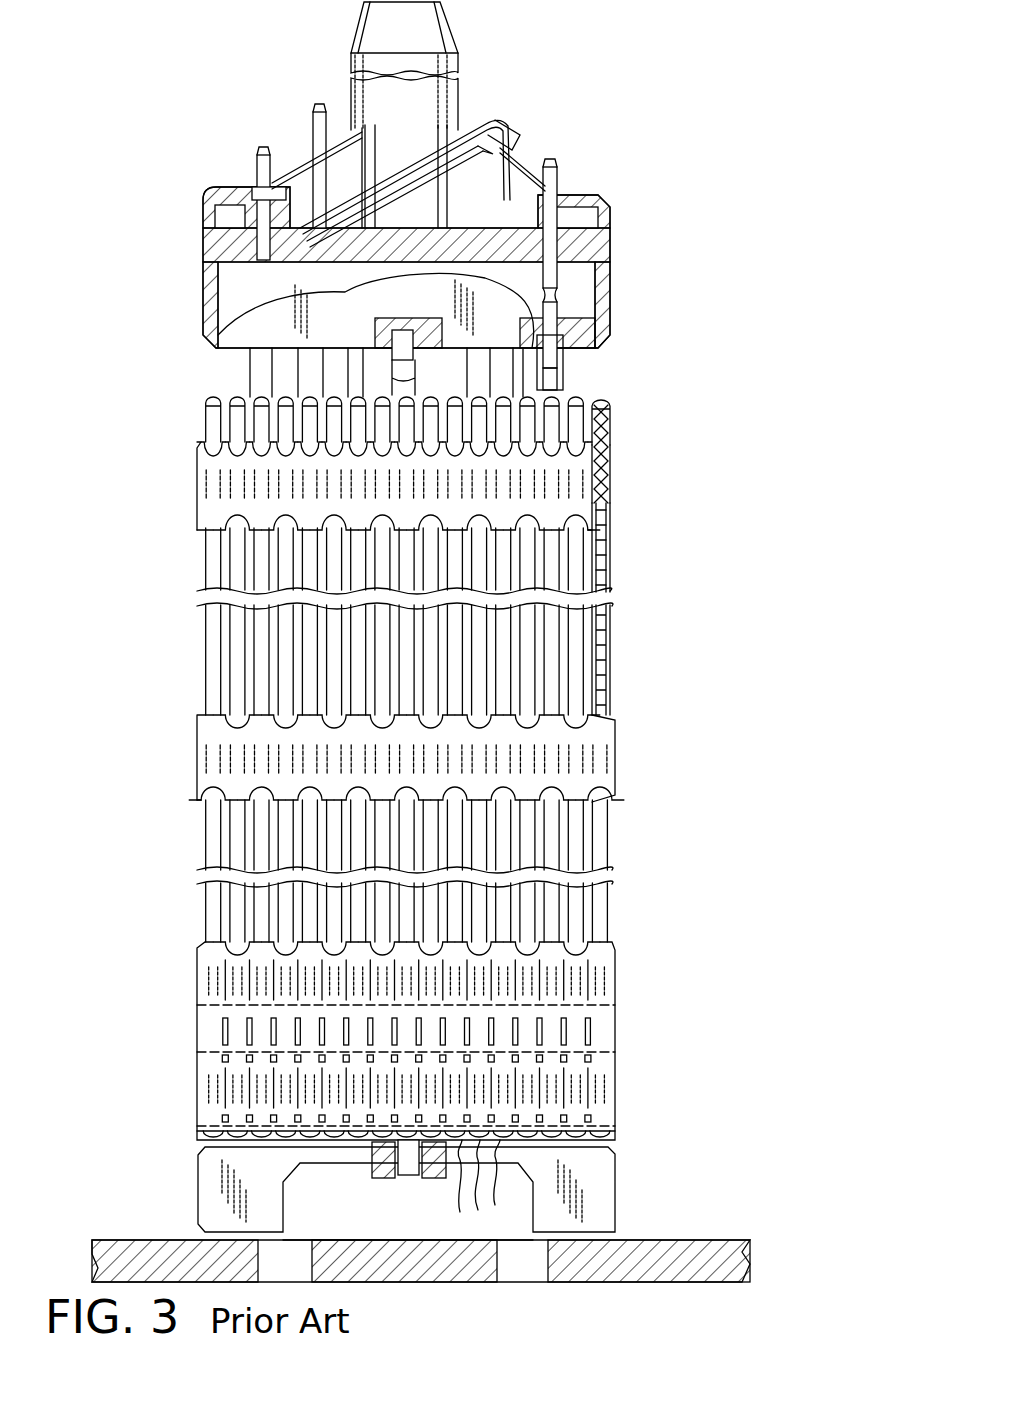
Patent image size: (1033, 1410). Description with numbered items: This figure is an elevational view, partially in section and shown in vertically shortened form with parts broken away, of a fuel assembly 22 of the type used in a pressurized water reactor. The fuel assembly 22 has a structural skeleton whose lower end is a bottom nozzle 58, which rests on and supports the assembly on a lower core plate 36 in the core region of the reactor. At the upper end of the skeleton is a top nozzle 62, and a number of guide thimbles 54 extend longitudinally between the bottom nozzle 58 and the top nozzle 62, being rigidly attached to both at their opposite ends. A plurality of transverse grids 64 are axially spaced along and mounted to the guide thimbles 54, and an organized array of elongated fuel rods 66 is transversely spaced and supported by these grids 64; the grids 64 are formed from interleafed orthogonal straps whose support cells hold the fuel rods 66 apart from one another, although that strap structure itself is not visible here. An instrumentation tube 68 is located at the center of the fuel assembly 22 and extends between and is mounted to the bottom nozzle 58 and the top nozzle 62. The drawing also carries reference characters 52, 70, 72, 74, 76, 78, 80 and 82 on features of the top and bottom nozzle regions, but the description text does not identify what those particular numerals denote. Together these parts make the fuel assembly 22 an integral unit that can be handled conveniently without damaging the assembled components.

The fuel assembly 22 is at (702, 262).
The lower core plate 36 is at (660, 1240).
The alignment pins 52 is at (322, 158).
The guide thimbles 54 is at (245, 380).
The bottom nozzle 58 is at (617, 1185).
The top nozzle 62 is at (612, 245).
The transverse grids 64 is at (197, 492).
The fuel rods 66 is at (200, 657).
The instrumentation tube 68 is at (413, 1168).
The grid springs 70 is at (602, 540).
The grid strap 72 is at (610, 405).
The flow openings 74 is at (491, 1179).
The dimples 76 is at (610, 468).
The guide tube 78 is at (596, 316).
The hold-down spring 80 is at (512, 105).
The upper post 82 is at (464, 96).